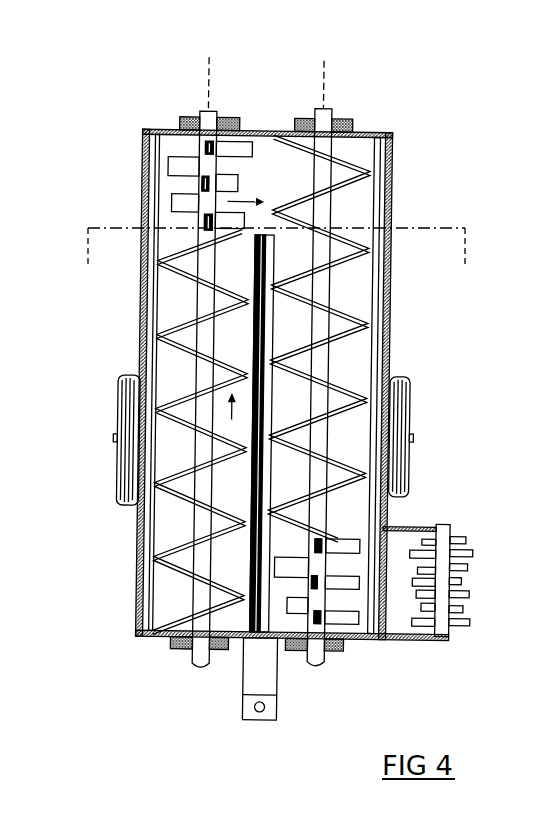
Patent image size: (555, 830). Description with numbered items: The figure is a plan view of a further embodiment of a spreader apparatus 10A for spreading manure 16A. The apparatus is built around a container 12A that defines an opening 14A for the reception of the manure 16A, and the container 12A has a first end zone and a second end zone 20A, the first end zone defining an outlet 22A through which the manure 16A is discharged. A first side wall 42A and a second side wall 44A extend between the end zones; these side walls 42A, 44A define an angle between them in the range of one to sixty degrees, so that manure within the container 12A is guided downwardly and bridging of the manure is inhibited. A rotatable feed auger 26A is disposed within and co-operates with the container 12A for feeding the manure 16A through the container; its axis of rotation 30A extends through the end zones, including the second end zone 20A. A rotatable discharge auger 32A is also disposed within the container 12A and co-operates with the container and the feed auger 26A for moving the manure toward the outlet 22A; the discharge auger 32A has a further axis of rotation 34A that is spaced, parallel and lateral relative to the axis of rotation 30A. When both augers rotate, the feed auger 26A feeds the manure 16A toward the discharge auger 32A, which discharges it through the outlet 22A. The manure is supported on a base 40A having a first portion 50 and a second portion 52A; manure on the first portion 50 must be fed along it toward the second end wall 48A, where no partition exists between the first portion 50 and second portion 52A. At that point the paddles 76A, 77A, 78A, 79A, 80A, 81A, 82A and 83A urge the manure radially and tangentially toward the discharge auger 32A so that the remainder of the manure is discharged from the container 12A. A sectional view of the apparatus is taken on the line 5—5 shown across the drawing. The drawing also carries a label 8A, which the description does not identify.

The section line 5— 5 is at (280, 263).
The mixing paddles on second shaft 8A is at (316, 585).
The spreader apparatus 10A is at (313, 68).
The container 12A is at (278, 643).
The opening 14A is at (148, 642).
The manure 16A is at (180, 596).
The second end zone 20A is at (360, 163).
The outlet 22A is at (385, 615).
The feed auger 26A is at (188, 361).
The axis of rotation 30A is at (208, 68).
The discharge auger 32A is at (372, 187).
The further axis of rotation 34A is at (322, 92).
The base 40A is at (356, 427).
The first side wall 42A is at (140, 342).
The second side wall 44A is at (386, 262).
The second end wall 48A is at (263, 132).
The first portion 50 is at (188, 319).
The second portion 52A is at (366, 367).
The paddle 76A is at (230, 232).
The paddle 77A is at (200, 227).
The paddle 78A is at (183, 207).
The paddle 79A is at (200, 187).
The paddle 80A is at (200, 173).
The paddle 81A is at (185, 162).
The paddle 82A is at (212, 148).
The paddle 83A is at (237, 150).